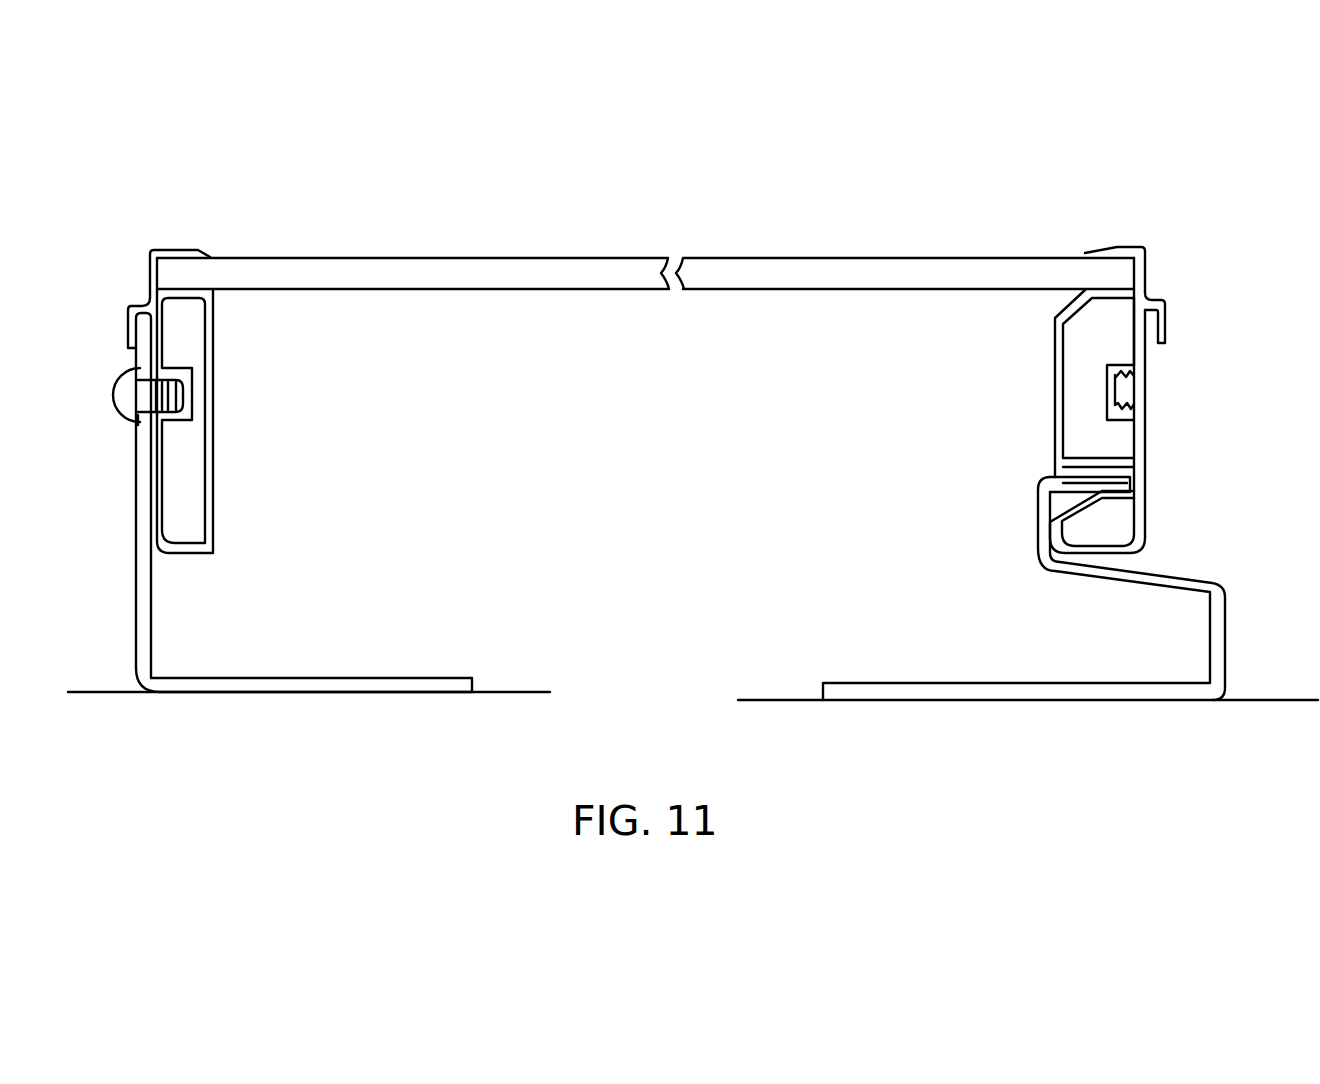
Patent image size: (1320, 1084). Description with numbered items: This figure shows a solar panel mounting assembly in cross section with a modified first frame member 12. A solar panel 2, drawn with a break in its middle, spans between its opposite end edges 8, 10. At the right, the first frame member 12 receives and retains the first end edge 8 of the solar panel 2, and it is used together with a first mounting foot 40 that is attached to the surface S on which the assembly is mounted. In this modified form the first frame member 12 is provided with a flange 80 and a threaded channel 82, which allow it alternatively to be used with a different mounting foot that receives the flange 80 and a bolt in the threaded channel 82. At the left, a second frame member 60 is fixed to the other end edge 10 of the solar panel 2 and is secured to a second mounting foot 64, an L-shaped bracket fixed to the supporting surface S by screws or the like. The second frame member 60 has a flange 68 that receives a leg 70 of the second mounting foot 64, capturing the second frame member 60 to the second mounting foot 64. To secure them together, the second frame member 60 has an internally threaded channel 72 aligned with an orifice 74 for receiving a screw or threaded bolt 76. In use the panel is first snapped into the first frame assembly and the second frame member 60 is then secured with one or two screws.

The solar panel 2 is at (477, 258).
The first end edge 8 is at (1108, 263).
The other end edge 10 is at (175, 265).
The first frame member 12 is at (1052, 372).
The first mounting foot 40 is at (1036, 522).
The second frame member 60 is at (215, 355).
The second mounting foot 64 is at (137, 553).
The flange 68 is at (128, 326).
The leg 70 is at (140, 476).
The internally threaded channel 72 is at (168, 414).
The orifice 74 is at (137, 428).
The screw or threaded bolt 76 is at (115, 395).
The flange 80 is at (1167, 320).
The threaded channel 82 is at (1130, 404).
The surface S is at (127, 692).